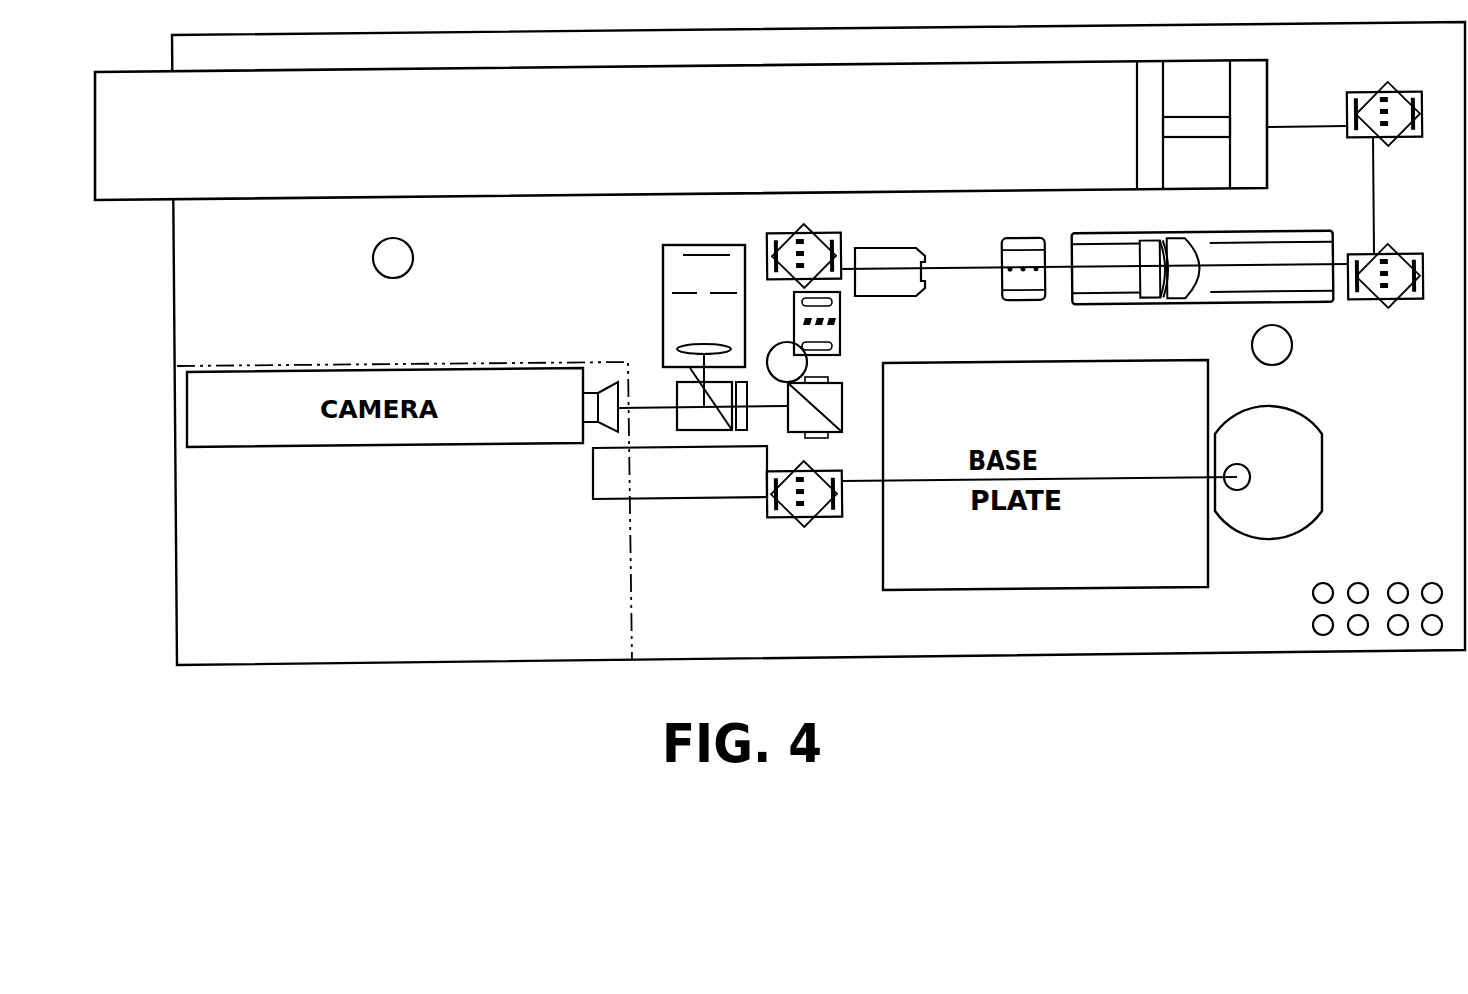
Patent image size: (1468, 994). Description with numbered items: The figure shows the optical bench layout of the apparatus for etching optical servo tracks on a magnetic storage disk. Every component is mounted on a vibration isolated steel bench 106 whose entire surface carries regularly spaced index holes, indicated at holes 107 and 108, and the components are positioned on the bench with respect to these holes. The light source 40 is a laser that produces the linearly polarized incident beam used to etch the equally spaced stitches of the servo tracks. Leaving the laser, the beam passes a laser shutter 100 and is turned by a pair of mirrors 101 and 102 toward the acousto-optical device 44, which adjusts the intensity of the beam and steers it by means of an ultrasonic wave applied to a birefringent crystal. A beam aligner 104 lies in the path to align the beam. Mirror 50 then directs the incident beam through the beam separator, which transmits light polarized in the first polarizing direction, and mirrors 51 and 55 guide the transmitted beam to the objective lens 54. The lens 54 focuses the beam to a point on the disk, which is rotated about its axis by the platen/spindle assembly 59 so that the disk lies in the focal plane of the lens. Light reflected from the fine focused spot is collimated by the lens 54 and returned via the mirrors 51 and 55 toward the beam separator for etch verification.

The light source 40 is at (160, 187).
The acousto-optical device 44 is at (1027, 240).
The mirror 50 is at (801, 228).
The mirror 51 is at (787, 518).
The objective lens 54 is at (1233, 490).
The mirror 55 is at (1260, 521).
The platen/spindle assembly 59 is at (1302, 527).
The laser shutter 100 is at (1267, 72).
The mirror 101 is at (1412, 92).
The mirror 102 is at (1407, 300).
The beam aligner 104 is at (895, 250).
The vibration isolated steel bench 106 is at (938, 658).
The holes 107 is at (1428, 636).
The holes 108 is at (1426, 583).